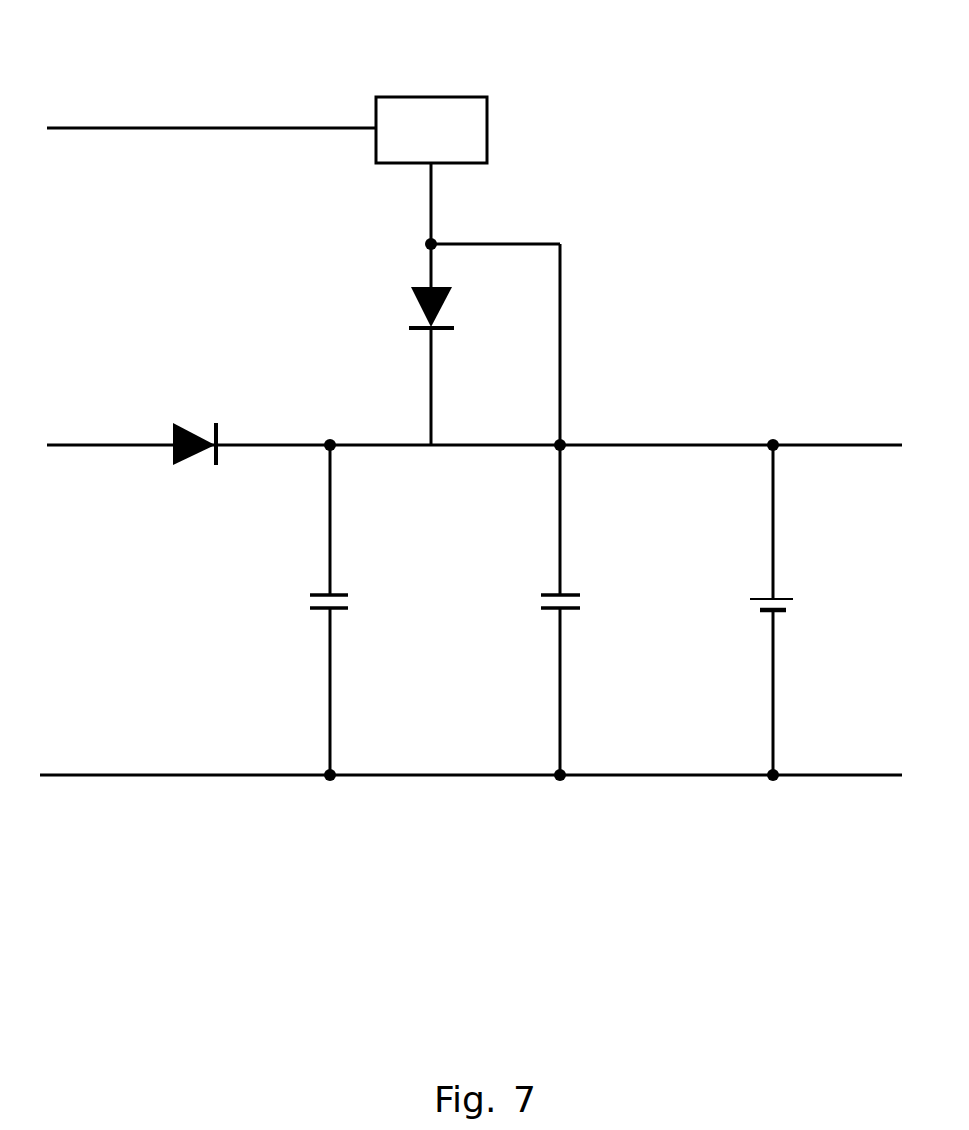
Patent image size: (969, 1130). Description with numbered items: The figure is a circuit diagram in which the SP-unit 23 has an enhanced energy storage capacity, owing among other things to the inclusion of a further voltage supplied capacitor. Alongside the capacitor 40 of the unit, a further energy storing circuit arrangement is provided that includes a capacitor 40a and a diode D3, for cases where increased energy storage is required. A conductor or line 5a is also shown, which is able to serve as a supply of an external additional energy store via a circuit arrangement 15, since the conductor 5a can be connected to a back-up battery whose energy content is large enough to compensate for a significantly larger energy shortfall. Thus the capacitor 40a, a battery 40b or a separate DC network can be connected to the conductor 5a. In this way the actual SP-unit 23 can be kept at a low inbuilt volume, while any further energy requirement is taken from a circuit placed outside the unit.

The circuit arrangement 15 is at (461, 93).
The SP-unit 23 is at (329, 128).
The conductor or line 5a is at (425, 196).
The diode D3 is at (414, 311).
The capacitor 40 is at (307, 602).
The capacitor 40a is at (589, 602).
The battery 40b is at (806, 602).